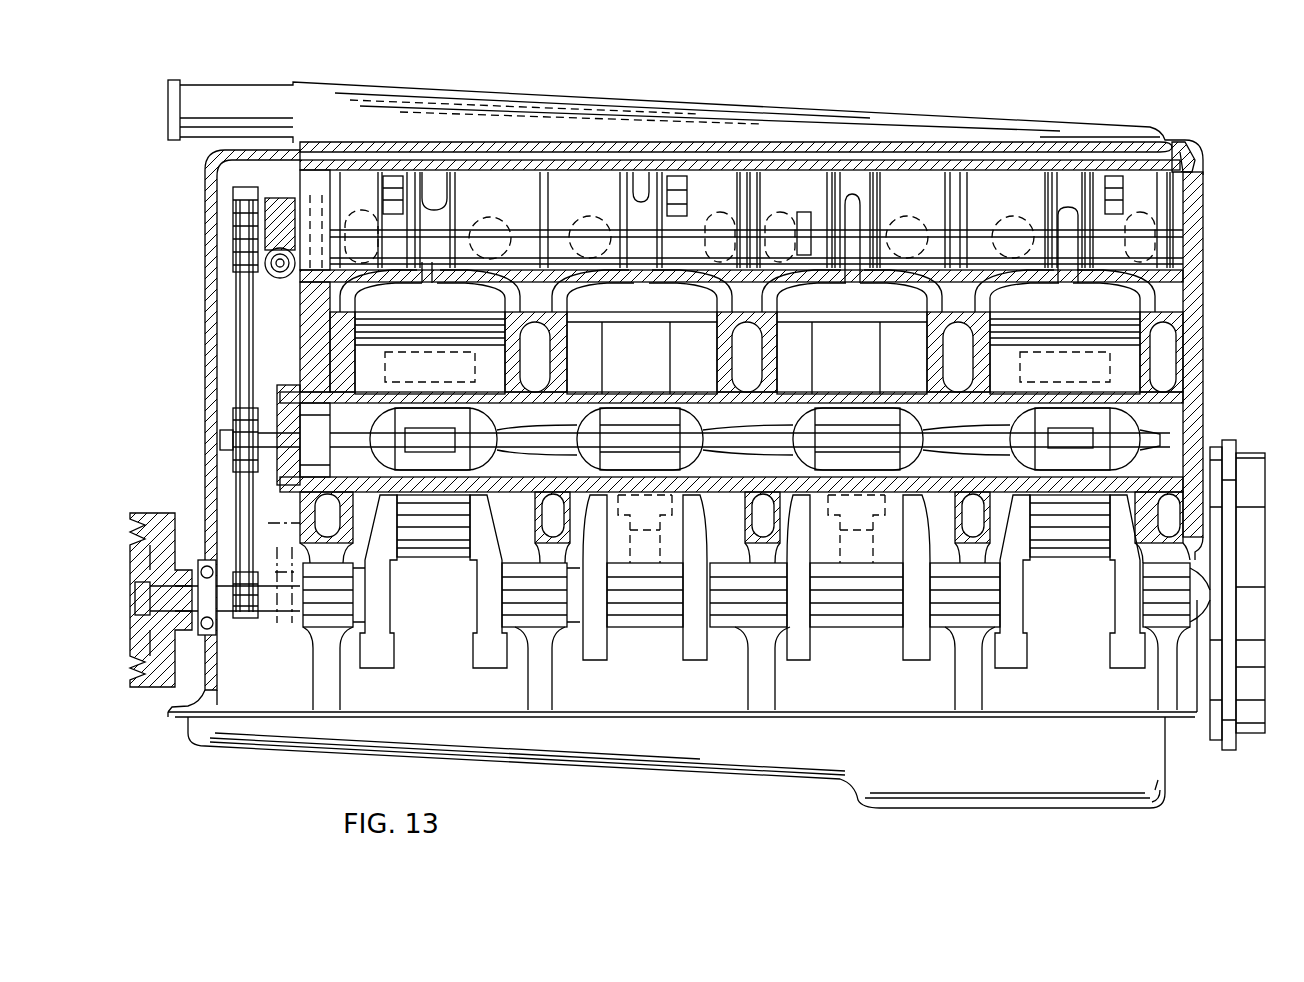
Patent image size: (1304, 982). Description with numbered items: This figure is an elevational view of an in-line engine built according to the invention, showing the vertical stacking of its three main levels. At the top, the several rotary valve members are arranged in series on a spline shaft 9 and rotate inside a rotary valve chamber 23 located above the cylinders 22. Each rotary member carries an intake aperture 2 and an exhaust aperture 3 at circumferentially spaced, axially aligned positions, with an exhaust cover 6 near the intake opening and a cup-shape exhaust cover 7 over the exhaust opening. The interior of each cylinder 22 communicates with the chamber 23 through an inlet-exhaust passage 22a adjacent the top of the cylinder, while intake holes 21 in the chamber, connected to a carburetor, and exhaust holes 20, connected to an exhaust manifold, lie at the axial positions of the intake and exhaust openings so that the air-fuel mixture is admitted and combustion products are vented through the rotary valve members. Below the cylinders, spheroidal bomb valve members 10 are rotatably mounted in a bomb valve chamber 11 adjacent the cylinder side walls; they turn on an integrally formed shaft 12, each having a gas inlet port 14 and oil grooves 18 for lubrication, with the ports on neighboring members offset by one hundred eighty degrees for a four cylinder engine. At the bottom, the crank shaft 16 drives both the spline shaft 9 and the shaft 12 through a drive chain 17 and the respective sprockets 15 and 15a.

The intake aperture 2 is at (858, 184).
The exhaust aperture 3 is at (437, 190).
The exhaust cover 6 is at (526, 213).
The cup-shape exhaust cover 7 is at (397, 178).
The spline shaft 9 is at (1188, 207).
The bomb valve member 10 is at (750, 438).
The bomb valve chamber 11 is at (1190, 368).
The shaft 12 is at (770, 440).
The gas inlet port 14 is at (1052, 440).
The sprocket 15 is at (262, 188).
The sprocket 15a is at (227, 458).
The crank shaft 16 is at (478, 622).
The drive chain 17 is at (240, 293).
The oil grooves 18 is at (660, 440).
The exhaust holes 20 is at (362, 245).
The intake holes 21 is at (586, 240).
The cylinder 22 is at (610, 300).
The inlet-exhaust passage 22a is at (1070, 300).
The rotary valve chamber 23 is at (380, 177).